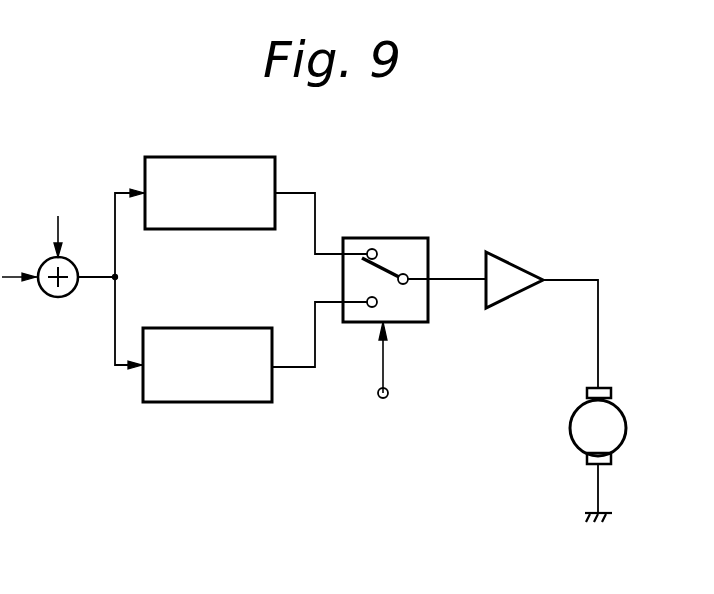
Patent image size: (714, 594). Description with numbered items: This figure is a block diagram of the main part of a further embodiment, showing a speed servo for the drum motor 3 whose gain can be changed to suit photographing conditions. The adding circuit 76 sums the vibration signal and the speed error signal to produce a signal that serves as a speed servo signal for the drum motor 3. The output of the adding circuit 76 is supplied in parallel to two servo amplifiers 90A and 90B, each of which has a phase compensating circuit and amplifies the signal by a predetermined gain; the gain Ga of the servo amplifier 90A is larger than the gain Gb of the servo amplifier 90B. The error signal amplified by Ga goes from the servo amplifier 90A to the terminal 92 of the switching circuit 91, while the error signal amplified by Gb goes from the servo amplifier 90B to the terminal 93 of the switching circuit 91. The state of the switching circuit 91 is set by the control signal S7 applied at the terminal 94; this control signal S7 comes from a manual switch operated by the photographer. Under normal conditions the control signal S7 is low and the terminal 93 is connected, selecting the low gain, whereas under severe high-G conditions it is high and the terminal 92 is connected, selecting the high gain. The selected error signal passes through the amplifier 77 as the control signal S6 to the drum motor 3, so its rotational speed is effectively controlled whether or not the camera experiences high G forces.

The adding circuit 76 is at (58, 298).
The servo amplifier 90A is at (198, 230).
The servo amplifier 90B is at (197, 403).
The switching circuit 91 is at (398, 294).
The terminal 92 is at (380, 248).
The terminal 93 is at (365, 323).
The terminal 94 is at (383, 400).
The control signal S7 is at (409, 389).
The amplifier 77 is at (515, 262).
The control signal S6 is at (627, 310).
The drum motor 3 is at (627, 428).